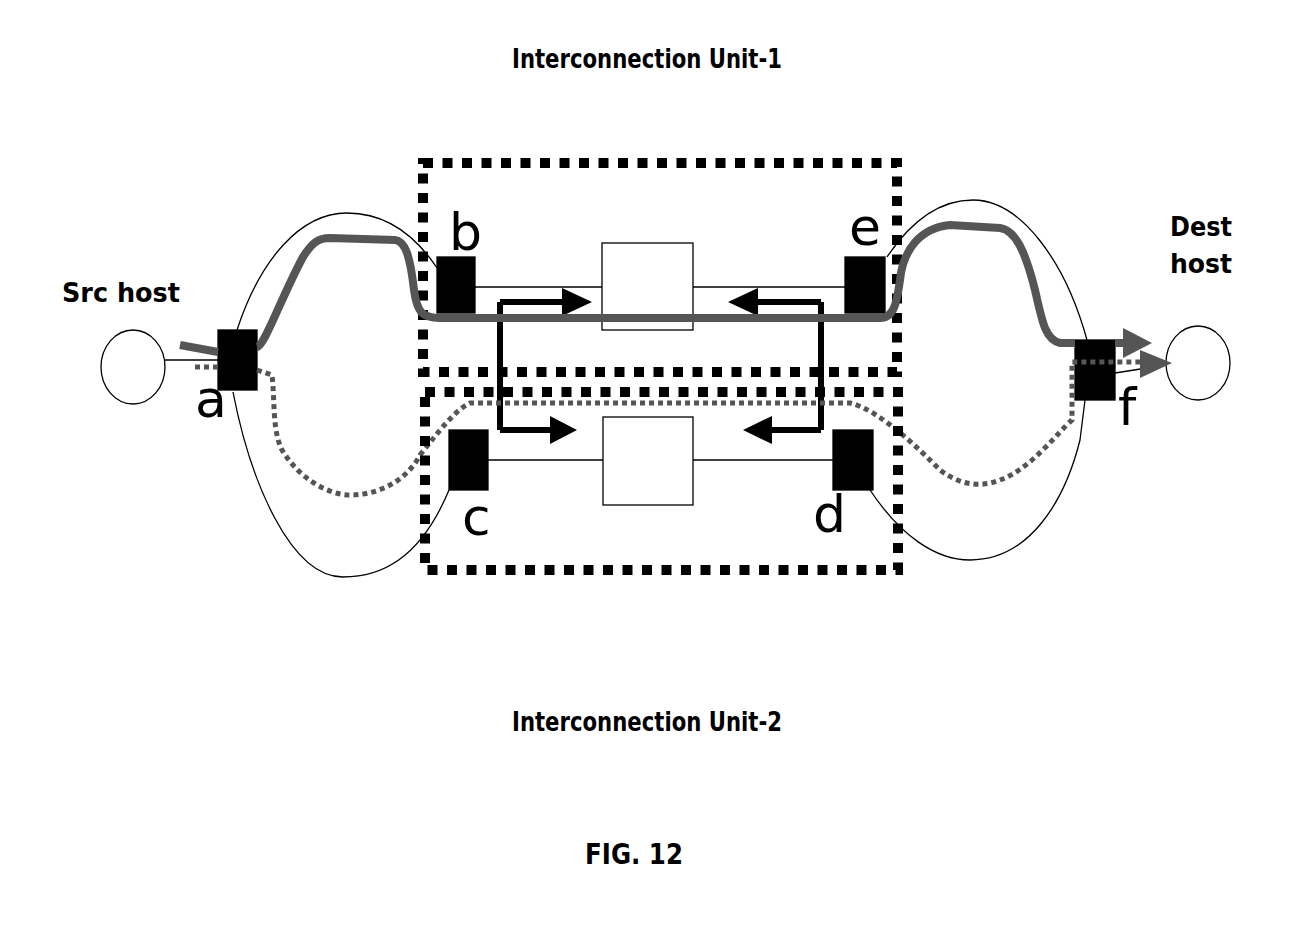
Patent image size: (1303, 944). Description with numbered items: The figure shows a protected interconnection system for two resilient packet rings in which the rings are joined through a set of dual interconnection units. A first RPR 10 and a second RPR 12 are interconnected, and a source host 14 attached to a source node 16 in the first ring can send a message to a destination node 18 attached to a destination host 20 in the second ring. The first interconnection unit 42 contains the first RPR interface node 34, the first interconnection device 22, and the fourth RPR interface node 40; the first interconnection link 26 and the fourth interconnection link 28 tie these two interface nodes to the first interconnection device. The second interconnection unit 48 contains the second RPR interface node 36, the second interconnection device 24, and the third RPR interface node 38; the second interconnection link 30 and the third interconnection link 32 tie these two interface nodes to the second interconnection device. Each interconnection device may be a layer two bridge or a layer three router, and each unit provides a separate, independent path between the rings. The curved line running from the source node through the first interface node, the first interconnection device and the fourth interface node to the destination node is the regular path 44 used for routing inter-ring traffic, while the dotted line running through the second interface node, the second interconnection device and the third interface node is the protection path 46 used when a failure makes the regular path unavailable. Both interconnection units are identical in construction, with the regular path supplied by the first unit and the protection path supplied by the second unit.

The first RPR R1 10 is at (343, 578).
The second RPR R2 12 is at (1003, 550).
The source host 14 is at (143, 405).
The source node a 16 is at (230, 390).
The destination node f 18 is at (1102, 400).
The destination host 20 is at (1190, 400).
The first interconnection device S1 22 is at (675, 242).
The second interconnection device S2 24 is at (640, 505).
The first interconnection link S1-b 26 is at (517, 287).
The fourth interconnection link S1-e 28 is at (742, 287).
The second interconnection link S2-c 30 is at (518, 460).
The third interconnection link S2-d 32 is at (723, 460).
The first RPR interface node b 34 is at (453, 257).
The second RPR interface node c 36 is at (458, 490).
The third RPR interface node d 38 is at (850, 490).
The fourth RPR interface node e 40 is at (948, 225).
The interconnection unit-1 42 is at (638, 158).
The regular path 44 is at (1017, 243).
The protection path 46 is at (297, 472).
The interconnection unit-2 48 is at (603, 567).